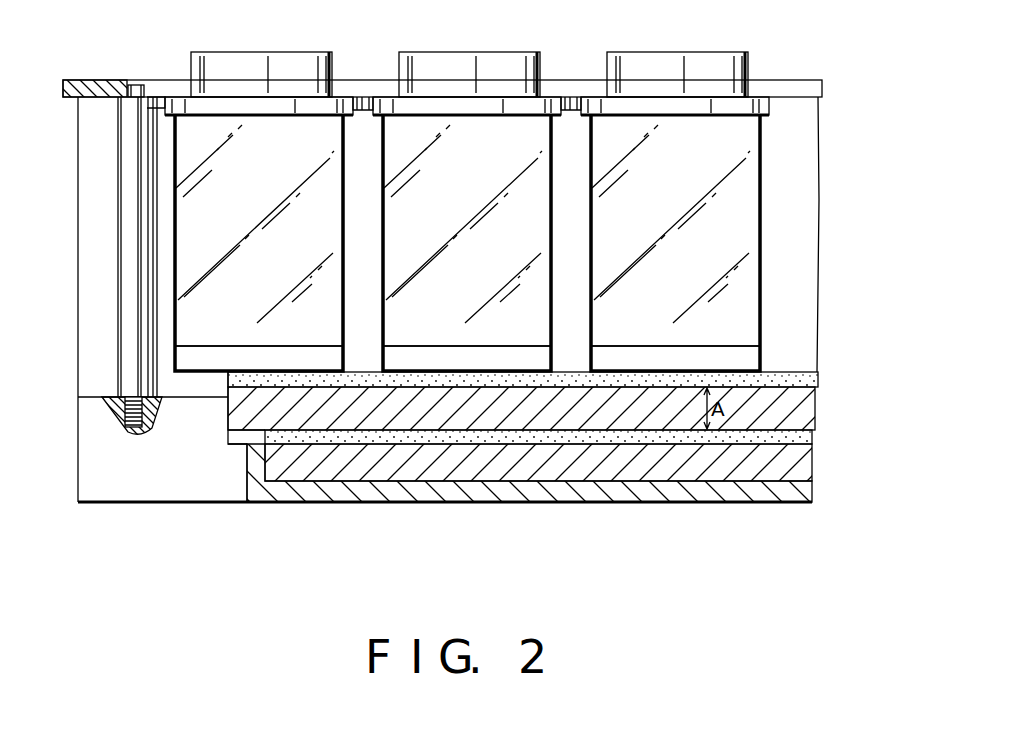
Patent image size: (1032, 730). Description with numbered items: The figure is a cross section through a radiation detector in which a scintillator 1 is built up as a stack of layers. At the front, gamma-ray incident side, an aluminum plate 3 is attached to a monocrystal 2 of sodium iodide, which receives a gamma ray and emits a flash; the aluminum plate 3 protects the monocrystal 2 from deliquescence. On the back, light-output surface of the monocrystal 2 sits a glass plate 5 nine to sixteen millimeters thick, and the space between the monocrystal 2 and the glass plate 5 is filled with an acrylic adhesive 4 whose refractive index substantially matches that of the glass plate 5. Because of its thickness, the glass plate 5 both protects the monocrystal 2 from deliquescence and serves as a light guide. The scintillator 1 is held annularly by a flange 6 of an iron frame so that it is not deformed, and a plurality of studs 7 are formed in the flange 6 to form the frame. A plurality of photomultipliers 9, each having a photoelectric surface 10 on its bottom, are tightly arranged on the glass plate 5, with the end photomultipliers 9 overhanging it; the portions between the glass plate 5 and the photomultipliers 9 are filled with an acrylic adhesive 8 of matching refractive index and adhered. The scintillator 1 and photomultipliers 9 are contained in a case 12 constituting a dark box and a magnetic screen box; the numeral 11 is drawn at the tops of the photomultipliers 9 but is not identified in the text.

The scintillator 1 is at (562, 455).
The monocrystal 2 is at (802, 463).
The aluminum plate 3 is at (553, 483).
The acrylic adhesive 4 is at (800, 438).
The glass plate 5 is at (795, 408).
The flange 6 is at (180, 490).
The stud 7 is at (118, 276).
The acrylic adhesive 8 is at (790, 381).
The photomultiplier 9 is at (353, 235).
The photoelectric surface 10 is at (310, 357).
The cap 11 is at (294, 53).
The case 12 is at (78, 340).